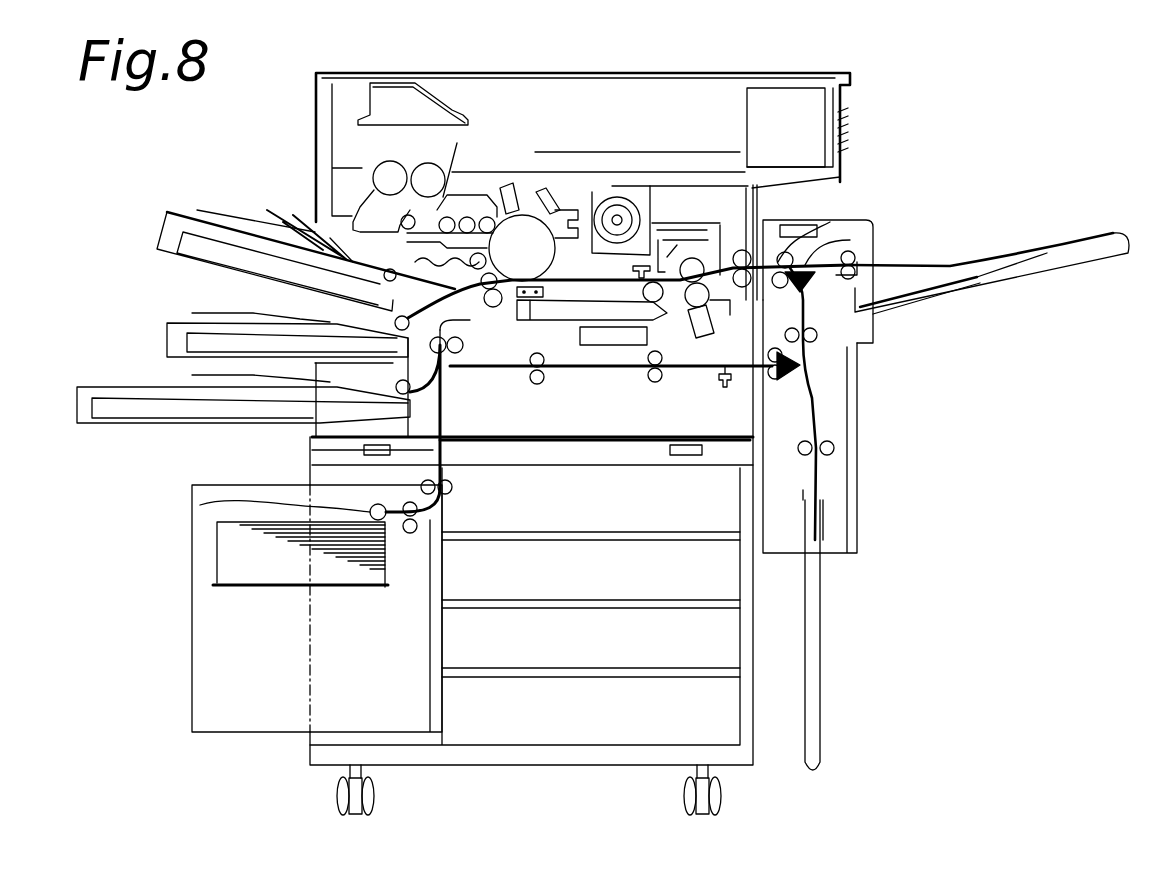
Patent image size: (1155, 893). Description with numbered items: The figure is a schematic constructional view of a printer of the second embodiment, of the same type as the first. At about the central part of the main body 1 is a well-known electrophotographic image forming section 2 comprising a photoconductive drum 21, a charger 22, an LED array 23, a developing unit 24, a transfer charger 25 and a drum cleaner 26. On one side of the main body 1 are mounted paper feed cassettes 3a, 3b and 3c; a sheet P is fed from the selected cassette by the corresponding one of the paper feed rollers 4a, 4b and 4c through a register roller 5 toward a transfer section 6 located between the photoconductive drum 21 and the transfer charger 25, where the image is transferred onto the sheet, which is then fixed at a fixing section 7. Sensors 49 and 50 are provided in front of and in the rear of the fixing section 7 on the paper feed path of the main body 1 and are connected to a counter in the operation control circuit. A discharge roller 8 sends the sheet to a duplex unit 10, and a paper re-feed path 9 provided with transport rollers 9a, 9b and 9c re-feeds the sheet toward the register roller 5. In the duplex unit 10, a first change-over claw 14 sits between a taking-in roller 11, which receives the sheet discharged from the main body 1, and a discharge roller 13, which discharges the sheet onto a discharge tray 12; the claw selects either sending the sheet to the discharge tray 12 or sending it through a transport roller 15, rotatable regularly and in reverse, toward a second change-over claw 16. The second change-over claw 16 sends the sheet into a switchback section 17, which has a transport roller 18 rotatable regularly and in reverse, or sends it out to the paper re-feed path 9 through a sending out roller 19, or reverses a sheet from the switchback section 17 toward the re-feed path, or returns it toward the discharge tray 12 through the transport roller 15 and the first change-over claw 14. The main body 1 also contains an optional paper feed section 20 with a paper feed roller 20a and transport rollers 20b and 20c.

The main body 1 is at (660, 66).
The electrophotographic image forming section 2 is at (513, 183).
The paper feed cassette 3a is at (178, 212).
The paper feed cassette 3b is at (175, 322).
The paper feed cassette 3c is at (88, 387).
The paper feed roller 4a is at (388, 269).
The paper feed roller 4b is at (403, 318).
The paper feed roller 4c is at (330, 422).
The register roller 5 is at (492, 307).
The transfer section 6 is at (538, 308).
The fixing section 7 is at (683, 253).
The discharge roller 8 is at (768, 160).
The paper re-feed path 9 is at (633, 382).
The transport roller 9a is at (656, 383).
The transport roller 9b is at (537, 385).
The transport roller 9c is at (457, 354).
The duplex unit 10 is at (860, 483).
The taking-in roller 11 is at (794, 252).
The discharge tray 12 is at (1068, 262).
The discharge roller 13 is at (862, 256).
The first change-over claw 14 is at (870, 222).
The transport roller 15 is at (815, 336).
The second change-over claw 16 is at (784, 364).
The switchback section 17 is at (830, 526).
The transport roller 18 is at (835, 448).
The sending out roller 19 is at (813, 400).
The optional paper feed section 20 is at (242, 607).
The paper feed roller 20a is at (200, 505).
The transport roller 20b is at (408, 533).
The transport roller 20c is at (452, 488).
The photoconductive drum 21 is at (522, 248).
The charger 22 is at (541, 190).
The LED array 23 is at (509, 183).
The developing unit 24 is at (466, 190).
The transfer charger 25 is at (519, 300).
The drum cleaner 26 is at (568, 208).
The sensor 49 is at (606, 401).
The sensor 50 is at (725, 389).
The paper P is at (800, 403).